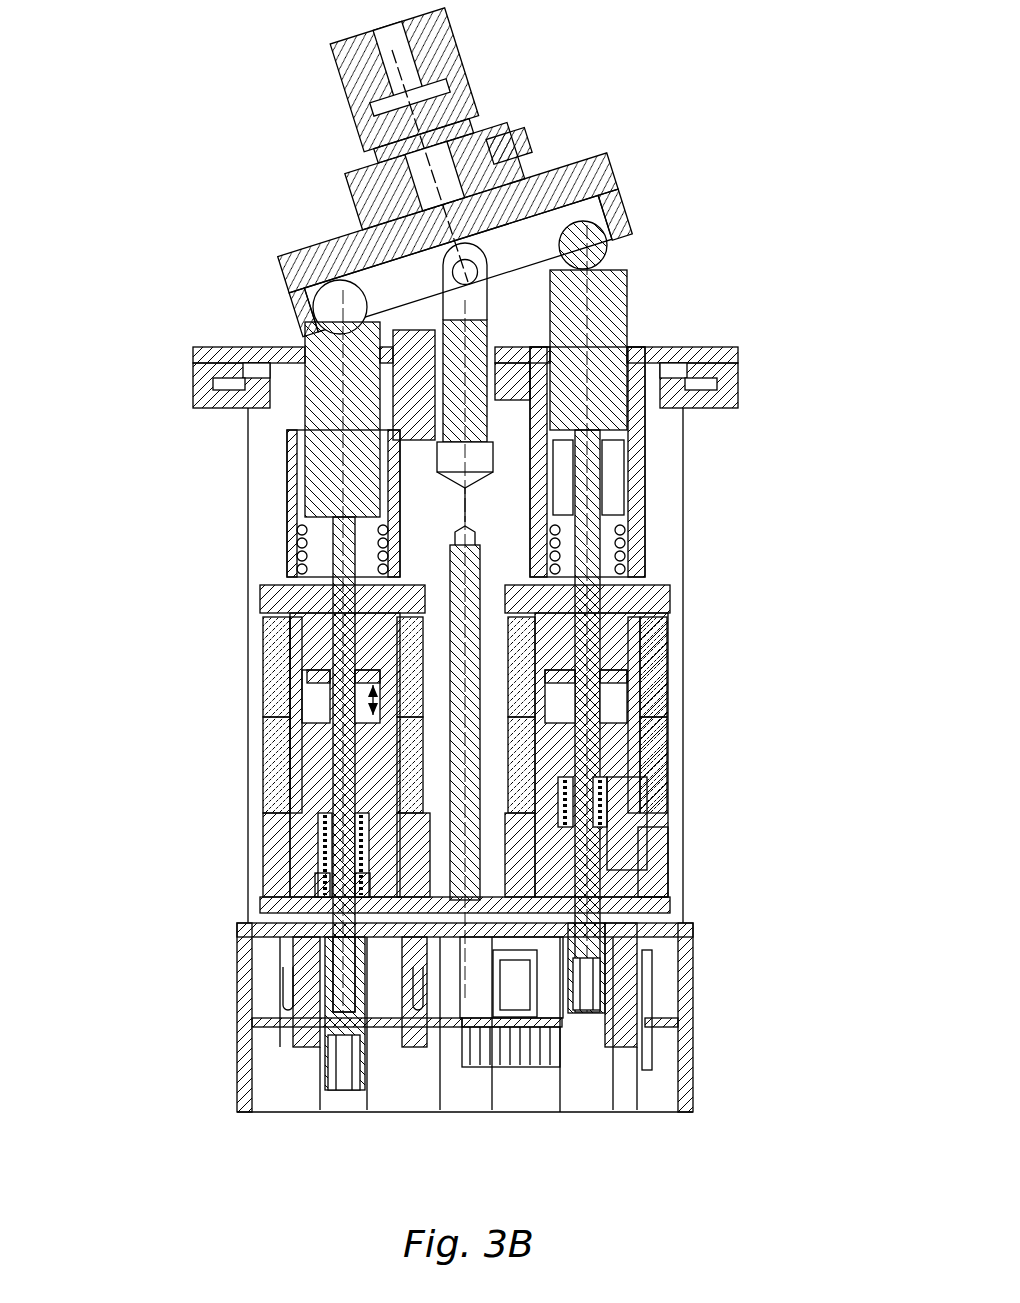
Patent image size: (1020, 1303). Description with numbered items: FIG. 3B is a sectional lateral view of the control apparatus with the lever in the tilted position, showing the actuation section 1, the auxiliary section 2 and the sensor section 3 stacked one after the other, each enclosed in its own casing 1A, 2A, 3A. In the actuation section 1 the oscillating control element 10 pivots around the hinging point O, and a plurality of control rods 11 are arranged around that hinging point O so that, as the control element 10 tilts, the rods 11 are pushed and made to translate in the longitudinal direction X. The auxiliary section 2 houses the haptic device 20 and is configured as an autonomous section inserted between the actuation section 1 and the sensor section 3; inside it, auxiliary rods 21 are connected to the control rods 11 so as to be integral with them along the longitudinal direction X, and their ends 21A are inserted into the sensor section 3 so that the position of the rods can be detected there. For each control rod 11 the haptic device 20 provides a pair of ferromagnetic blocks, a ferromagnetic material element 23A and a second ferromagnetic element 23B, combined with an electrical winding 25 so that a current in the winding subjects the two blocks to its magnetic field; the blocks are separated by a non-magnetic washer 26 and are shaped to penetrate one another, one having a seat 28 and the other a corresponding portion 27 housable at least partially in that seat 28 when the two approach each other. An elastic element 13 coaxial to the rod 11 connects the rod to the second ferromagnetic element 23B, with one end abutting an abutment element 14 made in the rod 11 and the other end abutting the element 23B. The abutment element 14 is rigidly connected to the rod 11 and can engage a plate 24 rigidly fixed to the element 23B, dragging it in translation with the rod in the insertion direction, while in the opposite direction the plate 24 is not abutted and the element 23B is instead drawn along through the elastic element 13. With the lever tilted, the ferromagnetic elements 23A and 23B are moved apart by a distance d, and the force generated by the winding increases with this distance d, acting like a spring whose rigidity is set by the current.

The actuation section 1 is at (178, 383).
The casing 1A is at (683, 465).
The oscillating control element 10 is at (548, 118).
The hinging point O is at (360, 185).
The longitudinal direction X is at (606, 250).
The control rods 11 is at (587, 530).
The elastic element 13 is at (683, 773).
The abutment element 14 is at (623, 870).
The auxiliary section 2 is at (467, 815).
The casing 2A is at (683, 817).
The haptic device 20 is at (263, 762).
The auxiliary rods 21 is at (693, 938).
The ends 21A is at (652, 967).
The ferromagnetic material element 23A is at (313, 650).
The second ferromagnetic element 23B is at (290, 762).
The plate 24 is at (288, 913).
The electrical winding 25 is at (298, 705).
The non-magnetic washer 26 is at (683, 657).
The portion 27 is at (683, 685).
The seat 28 is at (327, 657).
The sensor section 3 is at (503, 1028).
The casing 3A is at (693, 1018).
The distance d is at (378, 705).